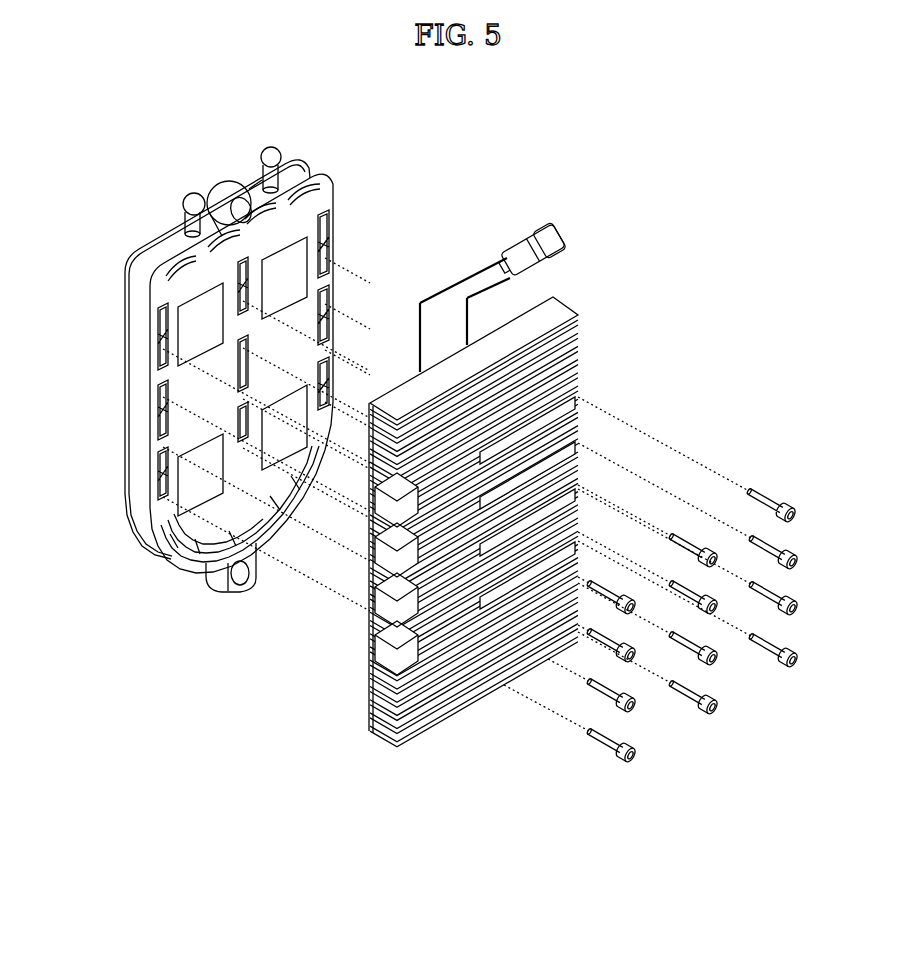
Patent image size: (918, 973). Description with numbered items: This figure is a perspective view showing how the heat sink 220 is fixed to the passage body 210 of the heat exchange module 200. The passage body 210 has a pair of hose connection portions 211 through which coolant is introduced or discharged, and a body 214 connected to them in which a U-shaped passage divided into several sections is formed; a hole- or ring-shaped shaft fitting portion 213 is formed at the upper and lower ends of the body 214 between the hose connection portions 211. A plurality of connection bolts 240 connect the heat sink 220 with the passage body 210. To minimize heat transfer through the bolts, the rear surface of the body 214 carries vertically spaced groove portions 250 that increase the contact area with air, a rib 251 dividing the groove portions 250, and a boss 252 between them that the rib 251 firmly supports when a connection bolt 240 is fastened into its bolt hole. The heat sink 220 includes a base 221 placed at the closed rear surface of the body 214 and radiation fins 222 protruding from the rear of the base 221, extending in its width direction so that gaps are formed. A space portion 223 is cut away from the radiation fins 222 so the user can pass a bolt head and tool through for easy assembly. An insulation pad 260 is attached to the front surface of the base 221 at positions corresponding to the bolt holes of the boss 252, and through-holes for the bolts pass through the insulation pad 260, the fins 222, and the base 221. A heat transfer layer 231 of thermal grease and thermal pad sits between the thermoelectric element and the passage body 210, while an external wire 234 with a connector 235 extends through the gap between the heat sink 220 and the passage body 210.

The heat exchange module 200 is at (606, 151).
The passage body 210 is at (338, 191).
The hose connection portions 211 is at (197, 200).
The shaft fitting portion 213 is at (226, 188).
The body 214 is at (150, 440).
The heat sink 220 is at (590, 334).
The base 221 is at (364, 727).
The radiation fins 222 is at (388, 735).
The space portion 223 is at (367, 590).
The heat transfer layer 231 is at (200, 305).
The external wire 234 is at (477, 272).
The connector 235 is at (567, 228).
The connection bolts 240 is at (598, 757).
The groove portions 250 is at (158, 385).
The rib 251 is at (157, 330).
The boss 252 is at (158, 345).
The insulation pad 260 is at (365, 617).